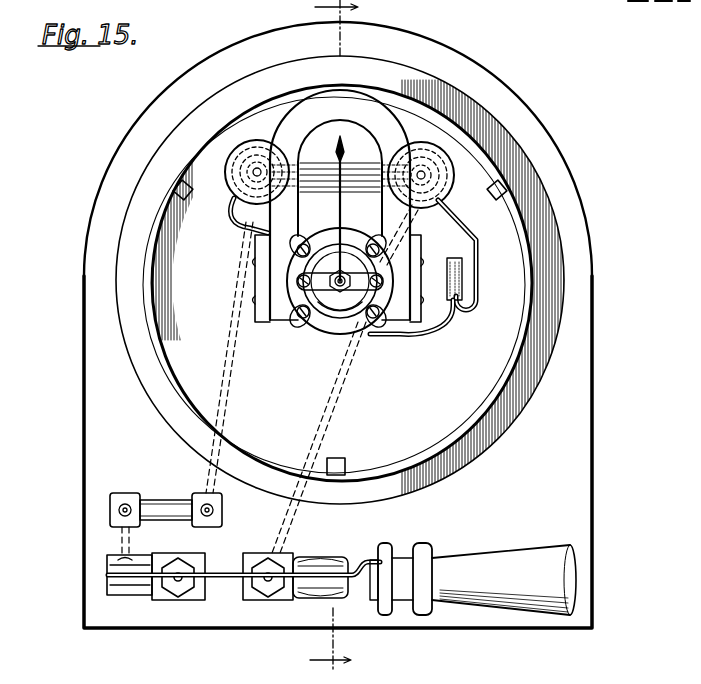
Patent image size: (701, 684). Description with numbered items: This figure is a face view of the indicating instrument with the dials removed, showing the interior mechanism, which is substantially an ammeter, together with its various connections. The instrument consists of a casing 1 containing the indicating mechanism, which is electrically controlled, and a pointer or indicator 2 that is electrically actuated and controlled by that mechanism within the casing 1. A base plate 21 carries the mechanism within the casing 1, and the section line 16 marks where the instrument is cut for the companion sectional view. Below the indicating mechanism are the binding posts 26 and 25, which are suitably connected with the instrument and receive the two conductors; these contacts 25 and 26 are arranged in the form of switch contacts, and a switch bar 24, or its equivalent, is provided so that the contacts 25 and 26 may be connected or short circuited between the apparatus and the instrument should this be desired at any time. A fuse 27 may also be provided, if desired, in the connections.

The casing 1 is at (515, 362).
The pointer or indicator 2 is at (340, 235).
The section line 16 is at (348, 337).
The base plate 21 is at (571, 497).
The switch bar 24 is at (212, 573).
The binding post 25 is at (107, 583).
The binding post 26 is at (313, 590).
The fuse 27 is at (155, 502).